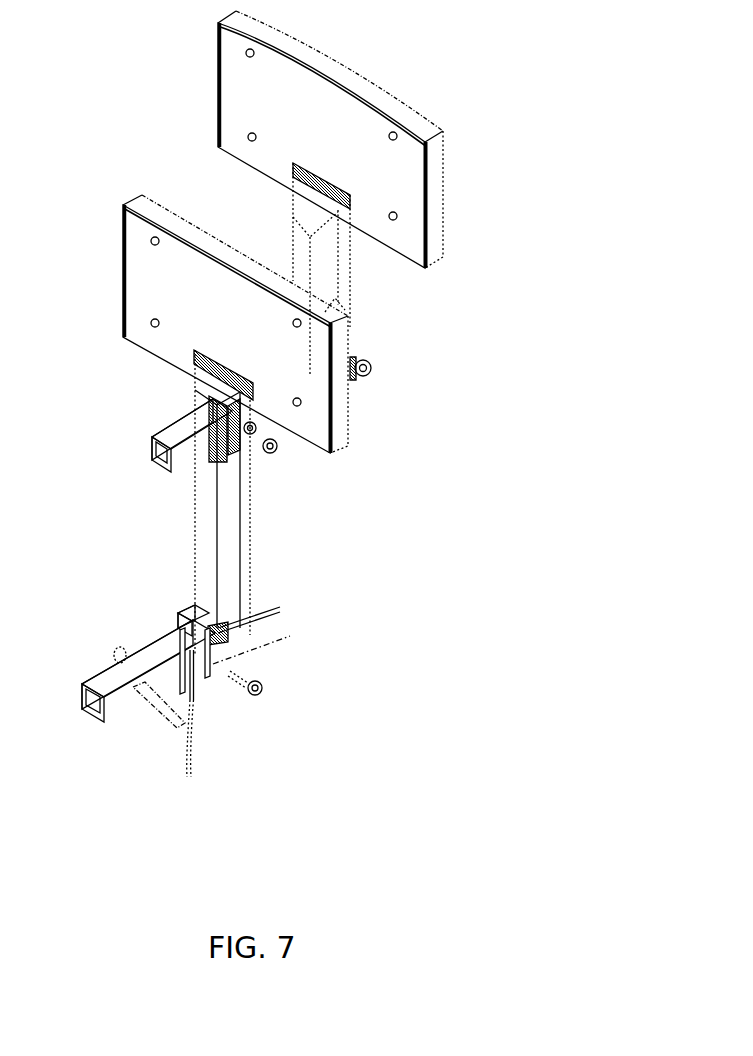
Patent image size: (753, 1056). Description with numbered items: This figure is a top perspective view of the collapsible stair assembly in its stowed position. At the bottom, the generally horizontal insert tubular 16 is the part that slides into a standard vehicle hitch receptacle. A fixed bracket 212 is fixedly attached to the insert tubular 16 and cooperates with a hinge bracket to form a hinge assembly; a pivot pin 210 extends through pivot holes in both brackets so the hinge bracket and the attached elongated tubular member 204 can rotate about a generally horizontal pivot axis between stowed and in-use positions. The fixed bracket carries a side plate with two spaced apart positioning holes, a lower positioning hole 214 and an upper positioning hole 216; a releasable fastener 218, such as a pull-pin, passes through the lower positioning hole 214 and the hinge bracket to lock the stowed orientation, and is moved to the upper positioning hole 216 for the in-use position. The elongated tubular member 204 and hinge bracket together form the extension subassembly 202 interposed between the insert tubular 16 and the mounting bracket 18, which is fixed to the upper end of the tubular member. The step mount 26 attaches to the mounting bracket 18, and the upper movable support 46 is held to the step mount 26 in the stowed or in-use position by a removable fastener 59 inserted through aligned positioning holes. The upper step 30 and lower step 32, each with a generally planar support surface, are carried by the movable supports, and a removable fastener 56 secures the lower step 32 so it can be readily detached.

The insert tubular 16 is at (95, 680).
The mounting bracket 18 is at (243, 465).
The step mount 26 is at (170, 431).
The upper step 30 is at (122, 248).
The lower step 32 is at (218, 97).
The upper movable support 46 is at (198, 398).
The fastener 56 is at (372, 364).
The removable or releasable fastener 59 is at (278, 452).
The extension subassembly 202 is at (160, 615).
The elongated tubular member 204 is at (248, 537).
The pivot pin 210 is at (217, 630).
The fixed bracket 212 is at (210, 682).
The lower positioning hole 214 is at (284, 640).
The upper positioning hole 216 is at (201, 733).
The releasable or removable fastener 218 is at (263, 694).